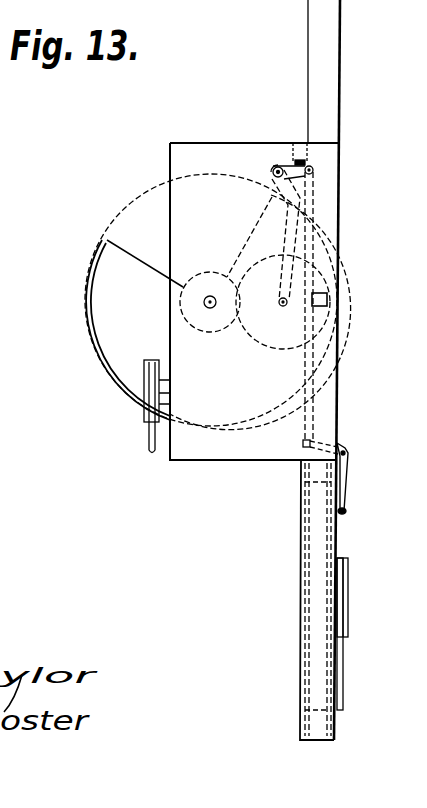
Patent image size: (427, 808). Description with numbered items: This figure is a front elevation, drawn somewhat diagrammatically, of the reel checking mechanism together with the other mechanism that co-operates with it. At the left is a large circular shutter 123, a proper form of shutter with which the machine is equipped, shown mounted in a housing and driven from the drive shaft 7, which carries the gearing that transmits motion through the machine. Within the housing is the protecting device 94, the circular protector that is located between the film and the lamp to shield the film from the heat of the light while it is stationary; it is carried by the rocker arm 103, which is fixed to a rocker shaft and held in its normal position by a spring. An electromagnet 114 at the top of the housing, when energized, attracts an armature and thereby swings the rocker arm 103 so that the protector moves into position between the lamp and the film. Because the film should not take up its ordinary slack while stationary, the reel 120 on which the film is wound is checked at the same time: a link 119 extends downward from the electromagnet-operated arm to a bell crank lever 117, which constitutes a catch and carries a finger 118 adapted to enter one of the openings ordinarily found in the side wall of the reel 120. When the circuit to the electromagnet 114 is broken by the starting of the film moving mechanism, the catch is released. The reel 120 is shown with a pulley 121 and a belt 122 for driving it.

The drive shaft 7 is at (160, 400).
The protecting device 94 is at (322, 313).
The rocker arm 103 is at (310, 231).
The electromagnet 114 is at (302, 154).
The bell crank lever 117 is at (343, 491).
The finger 118 is at (346, 511).
The link 119 is at (310, 412).
The reel 120 is at (332, 547).
The pulley 121 is at (349, 617).
The belt 122 is at (344, 672).
The shutter 123 is at (114, 377).